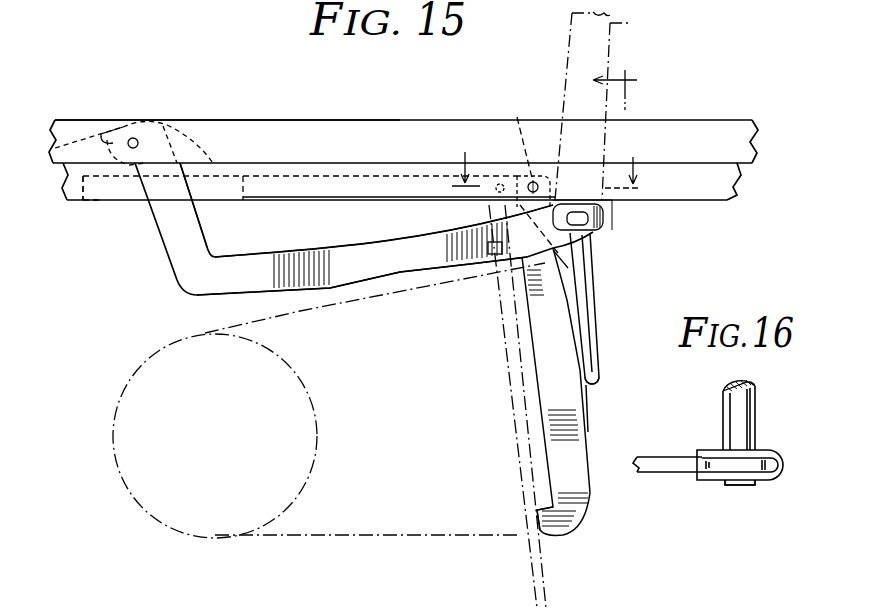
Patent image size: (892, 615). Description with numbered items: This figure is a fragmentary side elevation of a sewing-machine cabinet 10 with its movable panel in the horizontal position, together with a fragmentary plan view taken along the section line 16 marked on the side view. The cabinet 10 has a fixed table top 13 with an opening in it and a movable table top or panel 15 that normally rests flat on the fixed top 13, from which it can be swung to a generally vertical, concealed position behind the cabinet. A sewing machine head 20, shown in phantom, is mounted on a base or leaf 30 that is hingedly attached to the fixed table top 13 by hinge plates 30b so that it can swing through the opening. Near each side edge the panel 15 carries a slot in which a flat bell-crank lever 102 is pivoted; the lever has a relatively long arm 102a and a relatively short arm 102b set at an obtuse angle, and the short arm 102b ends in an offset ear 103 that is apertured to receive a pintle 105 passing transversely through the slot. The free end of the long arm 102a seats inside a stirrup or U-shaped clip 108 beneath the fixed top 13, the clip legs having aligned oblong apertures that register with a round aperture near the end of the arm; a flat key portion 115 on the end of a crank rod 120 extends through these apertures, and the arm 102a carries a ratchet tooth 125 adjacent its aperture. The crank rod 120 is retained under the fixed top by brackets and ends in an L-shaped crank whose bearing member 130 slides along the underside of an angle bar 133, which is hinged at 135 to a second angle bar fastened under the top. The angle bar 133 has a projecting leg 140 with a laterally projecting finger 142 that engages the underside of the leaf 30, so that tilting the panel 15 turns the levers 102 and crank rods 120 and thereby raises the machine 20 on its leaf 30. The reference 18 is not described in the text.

In FIG. 15, the cabinet 10 is at (373, 110).
In FIG. 15, the fixed table top 13 is at (706, 192).
In FIG. 15, the movable table top or panel 15 is at (252, 120).
In FIG. 15, the section line 16— 16 is at (551, 160).
In FIG. 15, the direction arrow 18 is at (627, 86).
In FIG. 15, the sewing machine head 20 is at (302, 536).
In FIG. 15, the leaf 30 is at (525, 575).
In FIG. 15, the hinge plates 30b is at (80, 194).
In FIG. 15, the bell-crank lever 102 is at (166, 293).
In FIG. 15, the long arm 102a is at (343, 284).
In FIG. 16, the long arm 102a is at (655, 476).
In FIG. 15, the short arm 102b is at (172, 220).
In FIG. 15, the offset ear 103 is at (98, 118).
In FIG. 15, the pintle 105 is at (132, 138).
In FIG. 15, the stirrup or U-shaped clip 108 is at (604, 233).
In FIG. 16, the stirrup or U-shaped clip 108 is at (775, 482).
In FIG. 16, the key portion 115 is at (735, 487).
In FIG. 15, the crank rod 120 is at (600, 268).
In FIG. 16, the crank rod 120 is at (748, 397).
In FIG. 15, the ratchet tooth 125 is at (560, 207).
In FIG. 15, the bearing member 130 is at (600, 381).
In FIG. 15, the angle bar 133 is at (589, 402).
In FIG. 15, the hinge connection 135 is at (527, 175).
In FIG. 15, the projecting leg 140 is at (563, 460).
In FIG. 15, the laterally projecting finger 142 is at (537, 513).